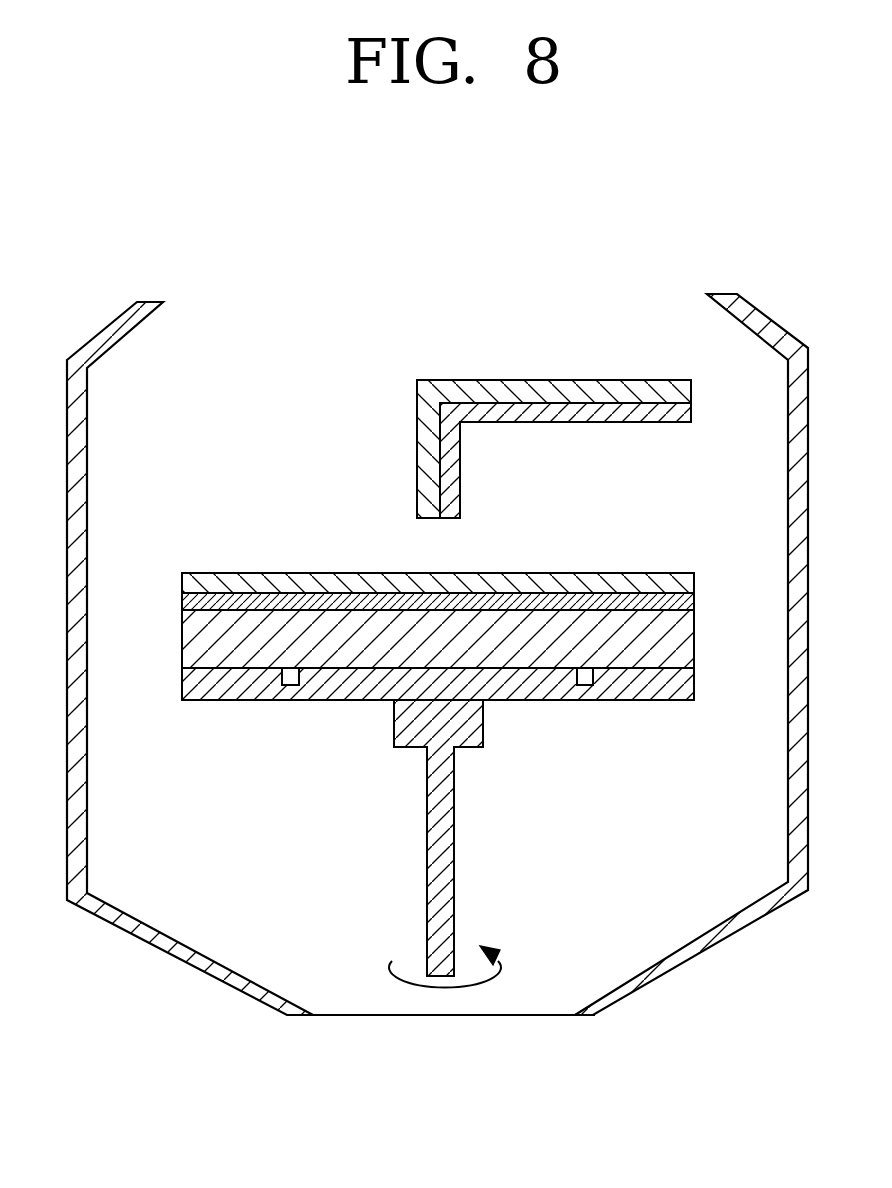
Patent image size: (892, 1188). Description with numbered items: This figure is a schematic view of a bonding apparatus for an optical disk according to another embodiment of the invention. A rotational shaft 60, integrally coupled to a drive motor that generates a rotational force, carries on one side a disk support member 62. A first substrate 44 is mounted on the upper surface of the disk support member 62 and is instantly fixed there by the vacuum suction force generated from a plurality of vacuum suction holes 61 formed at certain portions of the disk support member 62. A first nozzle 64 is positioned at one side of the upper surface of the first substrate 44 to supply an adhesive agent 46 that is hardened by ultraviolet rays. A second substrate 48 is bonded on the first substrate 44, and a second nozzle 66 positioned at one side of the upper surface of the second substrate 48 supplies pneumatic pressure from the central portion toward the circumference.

The first substrate 44 is at (688, 636).
The adhesive agent 46 is at (694, 602).
The second substrate 48 is at (694, 573).
The rotational shaft 60 is at (452, 864).
The vacuum suction holes 61 is at (590, 688).
The disk support member 62 is at (688, 681).
The first nozzle 64 is at (512, 384).
The second nozzle 66 is at (534, 410).